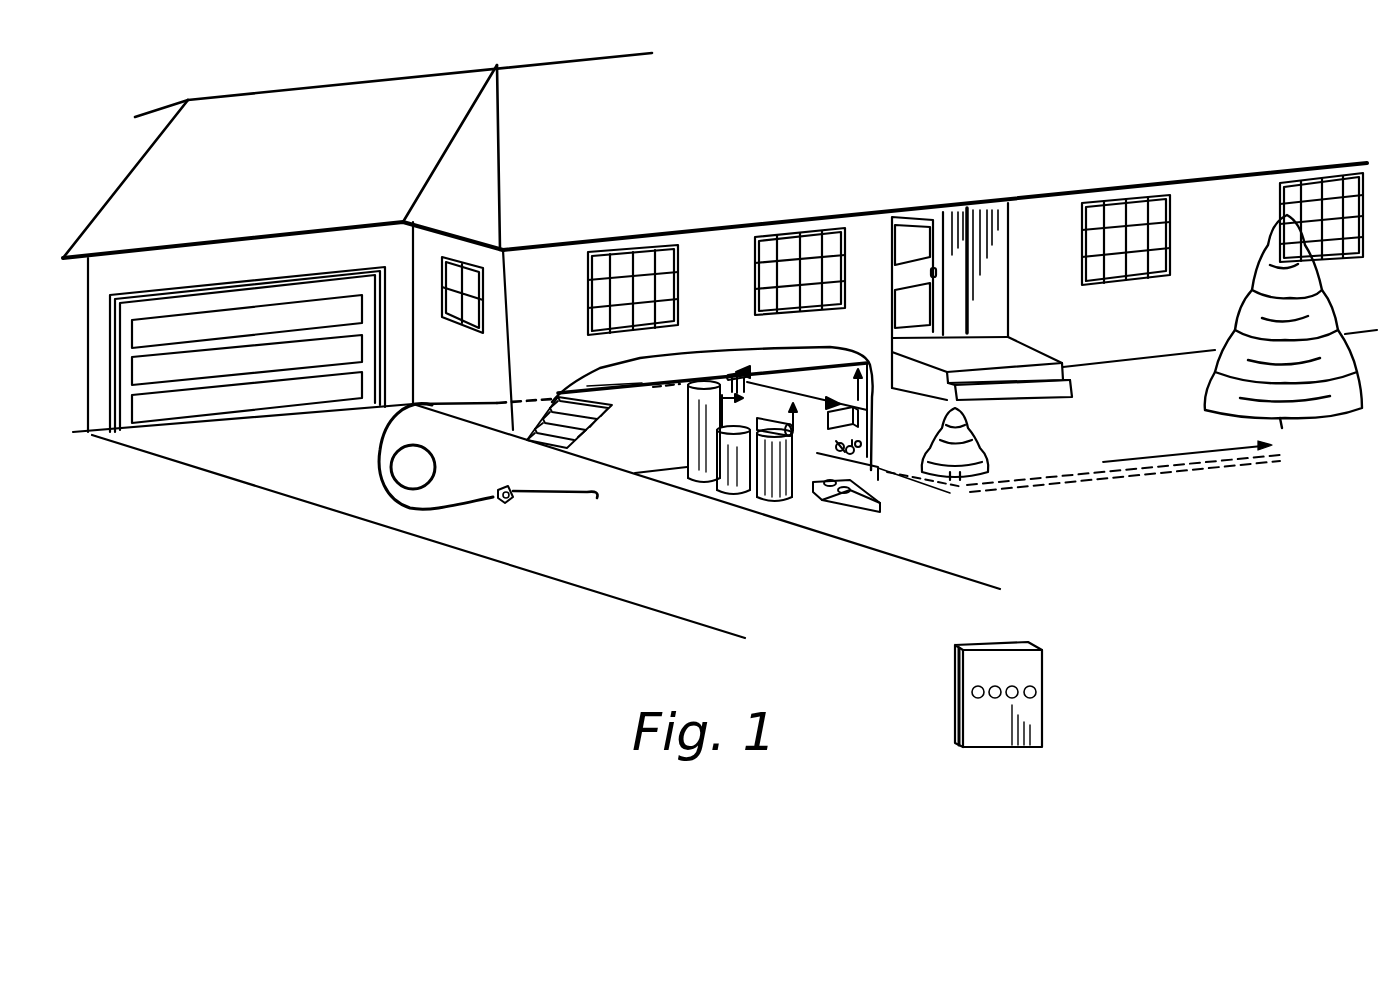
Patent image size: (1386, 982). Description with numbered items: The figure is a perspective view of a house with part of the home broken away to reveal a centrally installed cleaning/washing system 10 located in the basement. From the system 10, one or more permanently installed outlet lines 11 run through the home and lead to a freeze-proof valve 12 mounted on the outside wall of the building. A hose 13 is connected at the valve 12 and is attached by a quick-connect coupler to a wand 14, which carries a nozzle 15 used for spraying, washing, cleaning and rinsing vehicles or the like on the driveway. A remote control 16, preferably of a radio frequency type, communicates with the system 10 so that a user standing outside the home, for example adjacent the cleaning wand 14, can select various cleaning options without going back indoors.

The centrally installed cleaning/washing system 10 is at (776, 512).
The permanently installed outlet line 11 is at (635, 393).
The freeze-proof valve 12 is at (498, 405).
The hose 13 is at (377, 447).
The wand 14 is at (510, 487).
The nozzle 15 is at (597, 493).
The remote control 16 is at (1038, 640).